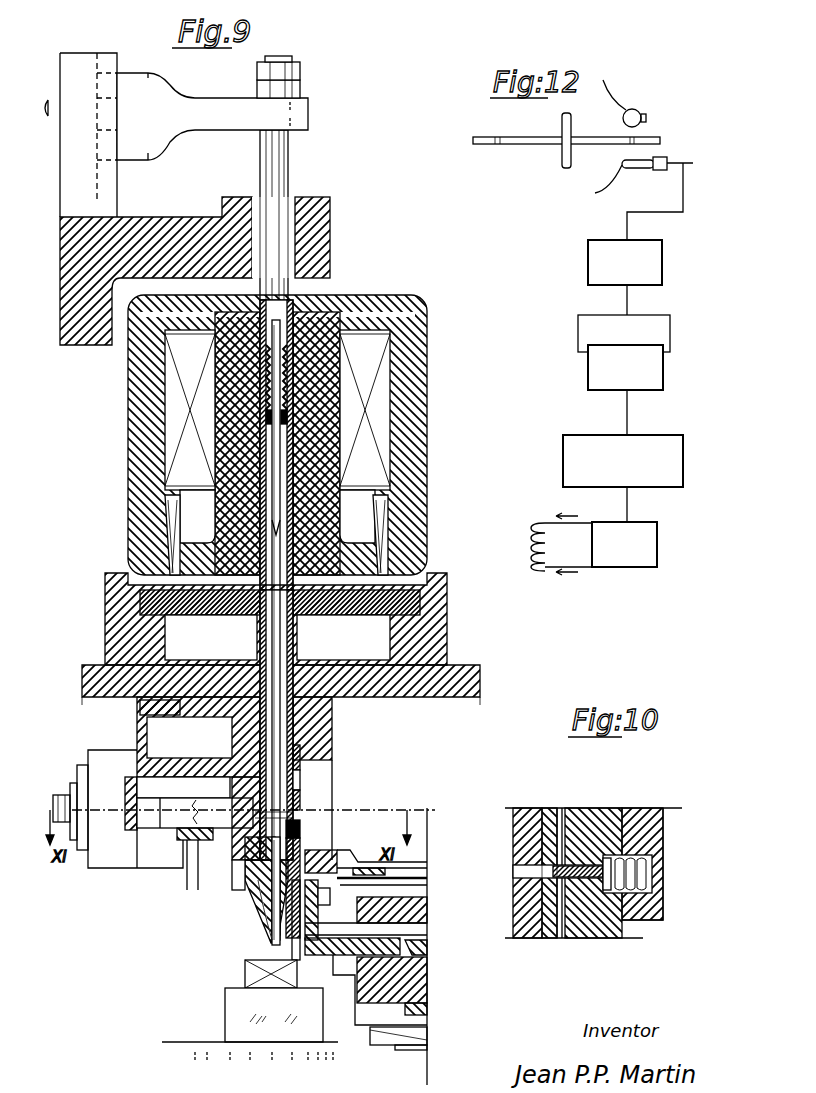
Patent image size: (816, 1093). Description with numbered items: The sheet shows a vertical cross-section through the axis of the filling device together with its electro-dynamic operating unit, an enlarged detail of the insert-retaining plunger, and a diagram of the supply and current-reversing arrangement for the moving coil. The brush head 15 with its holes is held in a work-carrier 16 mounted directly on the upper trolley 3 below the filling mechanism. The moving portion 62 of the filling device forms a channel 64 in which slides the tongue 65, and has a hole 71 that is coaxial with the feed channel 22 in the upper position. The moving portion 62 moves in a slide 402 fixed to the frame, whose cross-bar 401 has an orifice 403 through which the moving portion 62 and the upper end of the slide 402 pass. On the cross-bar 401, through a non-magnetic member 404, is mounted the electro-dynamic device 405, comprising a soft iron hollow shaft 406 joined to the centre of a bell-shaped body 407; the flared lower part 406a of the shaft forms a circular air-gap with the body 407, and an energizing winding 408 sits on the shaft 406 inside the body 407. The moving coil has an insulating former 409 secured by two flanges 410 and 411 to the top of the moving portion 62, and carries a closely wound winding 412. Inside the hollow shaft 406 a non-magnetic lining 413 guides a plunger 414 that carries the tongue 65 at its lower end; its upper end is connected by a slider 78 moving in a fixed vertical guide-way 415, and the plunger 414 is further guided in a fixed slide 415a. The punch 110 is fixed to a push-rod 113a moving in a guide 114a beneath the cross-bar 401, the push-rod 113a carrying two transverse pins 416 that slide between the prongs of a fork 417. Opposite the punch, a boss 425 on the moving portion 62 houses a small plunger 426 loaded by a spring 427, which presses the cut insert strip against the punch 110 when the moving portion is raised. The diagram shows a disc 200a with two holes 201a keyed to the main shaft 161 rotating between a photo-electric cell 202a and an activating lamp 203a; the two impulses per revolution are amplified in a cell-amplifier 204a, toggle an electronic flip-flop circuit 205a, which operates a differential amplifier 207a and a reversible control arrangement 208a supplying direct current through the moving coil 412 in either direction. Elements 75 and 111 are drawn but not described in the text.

In FIG. 9, the slider 78 is at (205, 102).
In FIG. 9, the plunger 414 is at (288, 170).
In FIG. 9, the fixed vertical guide-way 415 is at (80, 178).
In FIG. 9, the fixed slide 415a is at (300, 235).
In FIG. 9, the lining of non-magnetic metal 413 is at (258, 380).
In FIG. 9, the energizing winding 408 is at (382, 381).
In FIG. 9, the hollow shaft 406 is at (218, 407).
In FIG. 9, the body 407 is at (400, 425).
In FIG. 9, the tongue 65 is at (266, 463).
In FIG. 9, the electro-dynamic device 405 is at (420, 470).
In FIG. 9, the winding 412 is at (387, 532).
In FIG. 12, the winding 412 is at (532, 540).
In FIG. 9, the lower part of the hollow shaft 406a is at (198, 558).
In FIG. 9, the non-magnetic member 404 is at (106, 627).
In FIG. 9, the flange 411 is at (212, 628).
In FIG. 9, the flange 410 is at (300, 628).
In FIG. 9, the former 409 is at (447, 630).
In FIG. 9, the cross-bar 401 is at (427, 698).
In FIG. 9, the orifice 403 is at (318, 710).
In FIG. 9, the slide 402 is at (302, 733).
In FIG. 9, the moving portion 62 is at (302, 760).
In FIG. 10, the moving portion 62 is at (598, 924).
In FIG. 9, the channel 64 is at (302, 776).
In FIG. 10, the channel 64 is at (554, 900).
In FIG. 9, the boss 425 is at (302, 794).
In FIG. 10, the boss 425 is at (665, 842).
In FIG. 9, the clamping screw 75 is at (296, 828).
In FIG. 9, the guide 114a is at (131, 772).
In FIG. 9, the fork 417 is at (197, 776).
In FIG. 9, the transverse pins 416 is at (198, 833).
In FIG. 9, the push-rod 113a is at (160, 833).
In FIG. 9, the nozzle plate 111 is at (228, 832).
In FIG. 10, the nozzle plate 111 is at (524, 817).
In FIG. 9, the hole 71 is at (247, 878).
In FIG. 9, the punch 110 is at (225, 870).
In FIG. 10, the punch 110 is at (522, 870).
In FIG. 9, the feed channel 22 is at (410, 886).
In FIG. 9, the work-carrier 16 is at (250, 972).
In FIG. 9, the brush head 15 is at (232, 1002).
In FIG. 9, the trolley 3 is at (178, 1050).
In FIG. 12, the disc 200a is at (535, 145).
In FIG. 12, the main shaft 161 is at (572, 128).
In FIG. 12, the activating lamp 203a is at (643, 113).
In FIG. 12, the holes 201a is at (632, 146).
In FIG. 12, the photo-electric cell 202a is at (640, 168).
In FIG. 12, the cell-amplifier 204a is at (588, 256).
In FIG. 12, the electronic flip-flop circuit 205a is at (588, 370).
In FIG. 12, the differential amplifier 207a is at (572, 452).
In FIG. 12, the reversible control arrangement 208a is at (606, 568).
In FIG. 10, the small plunger 426 is at (590, 868).
In FIG. 10, the spring 427 is at (635, 895).